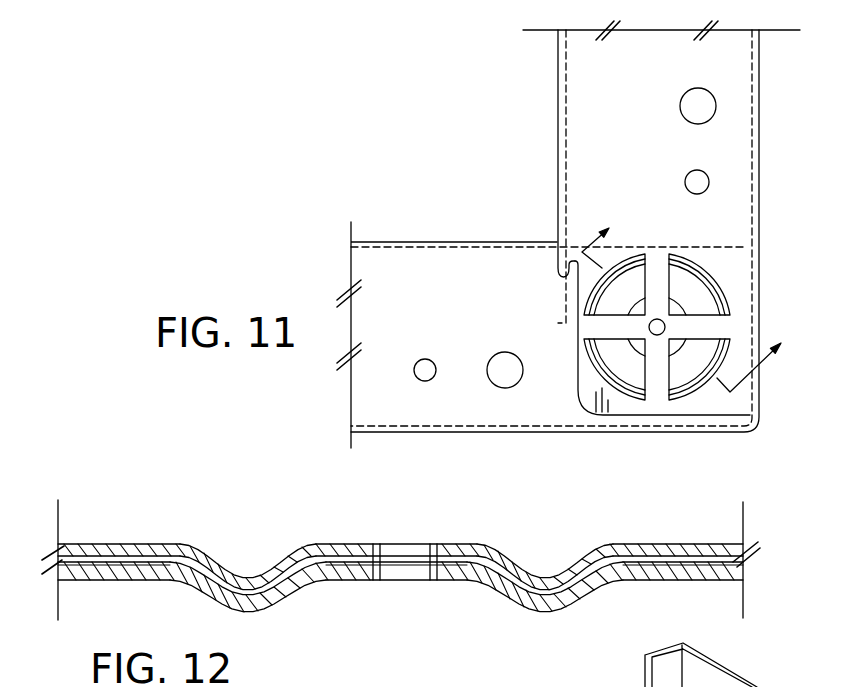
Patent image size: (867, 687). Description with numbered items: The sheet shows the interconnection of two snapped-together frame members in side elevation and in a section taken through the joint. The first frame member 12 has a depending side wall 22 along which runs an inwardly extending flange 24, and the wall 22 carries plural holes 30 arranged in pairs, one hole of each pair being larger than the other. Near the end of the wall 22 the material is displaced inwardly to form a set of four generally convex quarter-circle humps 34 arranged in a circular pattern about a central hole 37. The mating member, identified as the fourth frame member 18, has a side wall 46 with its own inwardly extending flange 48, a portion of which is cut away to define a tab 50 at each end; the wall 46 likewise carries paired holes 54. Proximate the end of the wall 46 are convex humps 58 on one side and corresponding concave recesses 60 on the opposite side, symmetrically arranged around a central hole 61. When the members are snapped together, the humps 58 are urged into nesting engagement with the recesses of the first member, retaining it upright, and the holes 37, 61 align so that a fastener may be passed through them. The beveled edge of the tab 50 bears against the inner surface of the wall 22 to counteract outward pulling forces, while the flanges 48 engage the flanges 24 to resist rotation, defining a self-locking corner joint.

In FIG. 11, the first frame member 12 is at (695, 294).
In FIG. 12, the fourth frame member 18 is at (806, 684).
In FIG. 11, the side wall 22 is at (424, 260).
In FIG. 12, the flange 24 is at (498, 684).
In FIG. 11, the holes 30 is at (436, 371).
In FIG. 12, the humps 34 is at (285, 597).
In FIG. 12, the hole 37 is at (412, 572).
In FIG. 11, the side wall 46 is at (582, 103).
In FIG. 12, the side wall 46 is at (732, 680).
In FIG. 12, the flange 48 is at (617, 679).
In FIG. 11, the tab 50 is at (556, 298).
In FIG. 11, the holes 54 is at (705, 106).
In FIG. 12, the humps 58 is at (197, 557).
In FIG. 11, the recesses 60 is at (704, 289).
In FIG. 12, the recesses 60 is at (252, 553).
In FIG. 12, the hole 61 is at (407, 552).